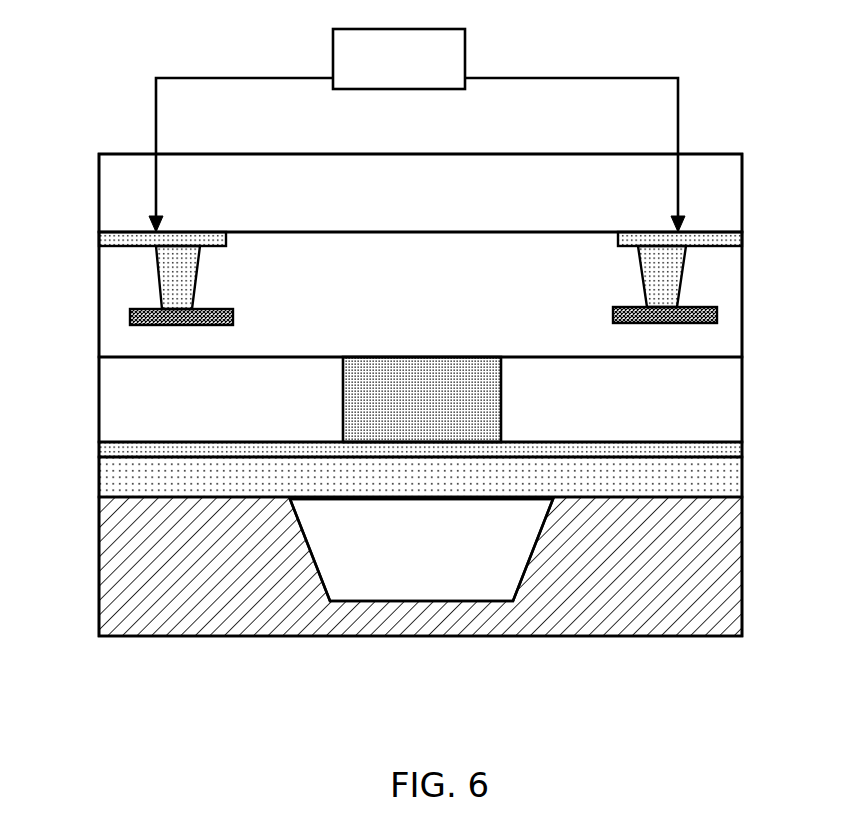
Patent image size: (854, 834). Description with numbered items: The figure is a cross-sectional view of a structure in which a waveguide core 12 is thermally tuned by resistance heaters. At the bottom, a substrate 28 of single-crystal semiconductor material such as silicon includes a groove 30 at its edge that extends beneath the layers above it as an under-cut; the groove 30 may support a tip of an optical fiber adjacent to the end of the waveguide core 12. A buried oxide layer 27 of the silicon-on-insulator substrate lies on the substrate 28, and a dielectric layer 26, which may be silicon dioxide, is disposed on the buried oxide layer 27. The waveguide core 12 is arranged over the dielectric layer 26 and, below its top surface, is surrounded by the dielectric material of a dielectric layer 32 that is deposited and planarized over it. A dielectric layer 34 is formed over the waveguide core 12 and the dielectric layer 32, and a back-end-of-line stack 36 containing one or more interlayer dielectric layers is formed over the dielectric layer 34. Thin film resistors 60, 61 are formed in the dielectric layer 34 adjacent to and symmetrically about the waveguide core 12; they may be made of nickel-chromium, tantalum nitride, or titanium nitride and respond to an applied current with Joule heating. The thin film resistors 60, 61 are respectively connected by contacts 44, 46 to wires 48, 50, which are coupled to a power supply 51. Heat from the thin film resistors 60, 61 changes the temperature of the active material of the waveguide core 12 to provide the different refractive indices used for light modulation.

The waveguide core 12 is at (448, 400).
The dielectric layer 26 is at (697, 452).
The buried oxide layer 27 is at (130, 478).
The substrate 28 is at (130, 572).
The groove 30 is at (432, 561).
The dielectric layer 32 is at (137, 403).
The dielectric layer 34 is at (703, 345).
The back-end-of-line stack 36 is at (710, 198).
The contact 44 is at (177, 278).
The contact 46 is at (660, 270).
The wire 48 is at (140, 240).
The wire 50 is at (700, 240).
The power supply 51 is at (424, 53).
The thin film resistor 60 is at (150, 318).
The thin film resistor 61 is at (705, 315).